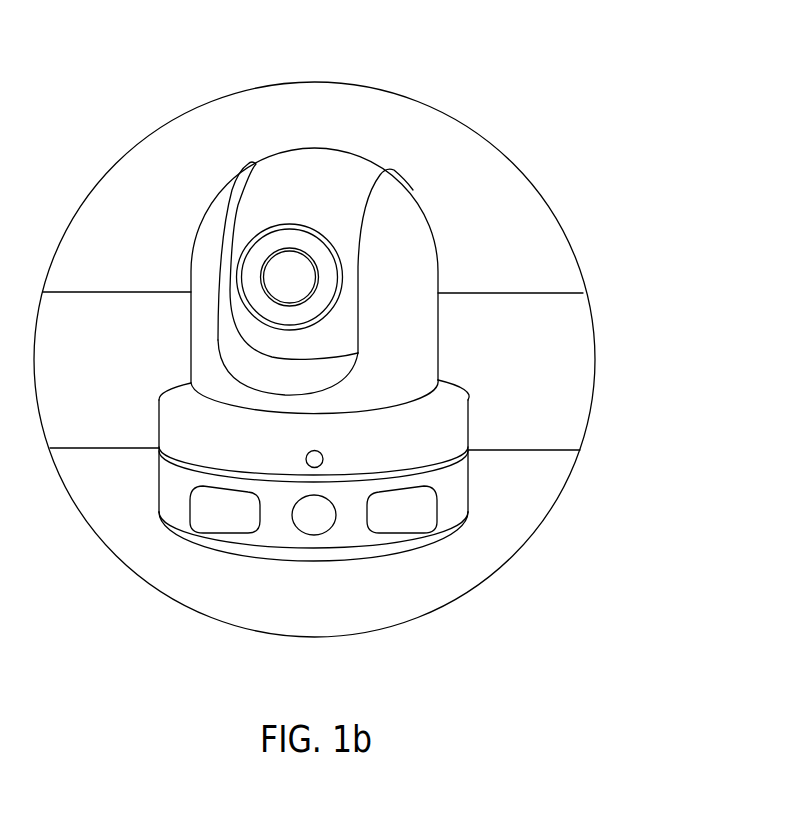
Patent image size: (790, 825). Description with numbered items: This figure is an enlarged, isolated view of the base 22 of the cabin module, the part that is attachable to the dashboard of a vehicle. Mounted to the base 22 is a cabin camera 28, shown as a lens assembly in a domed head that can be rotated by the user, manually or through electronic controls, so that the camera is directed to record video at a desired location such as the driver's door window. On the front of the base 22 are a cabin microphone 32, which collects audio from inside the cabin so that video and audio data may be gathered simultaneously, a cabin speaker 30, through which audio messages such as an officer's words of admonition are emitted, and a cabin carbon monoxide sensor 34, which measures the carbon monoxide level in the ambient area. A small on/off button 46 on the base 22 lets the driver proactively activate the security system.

The base 22 is at (402, 199).
The cabin camera 28 is at (290, 263).
The cabin speaker 30 is at (218, 519).
The cabin microphone 32 is at (316, 526).
The cabin carbon monoxide sensor 34 is at (423, 513).
The on/off button 46 is at (323, 459).